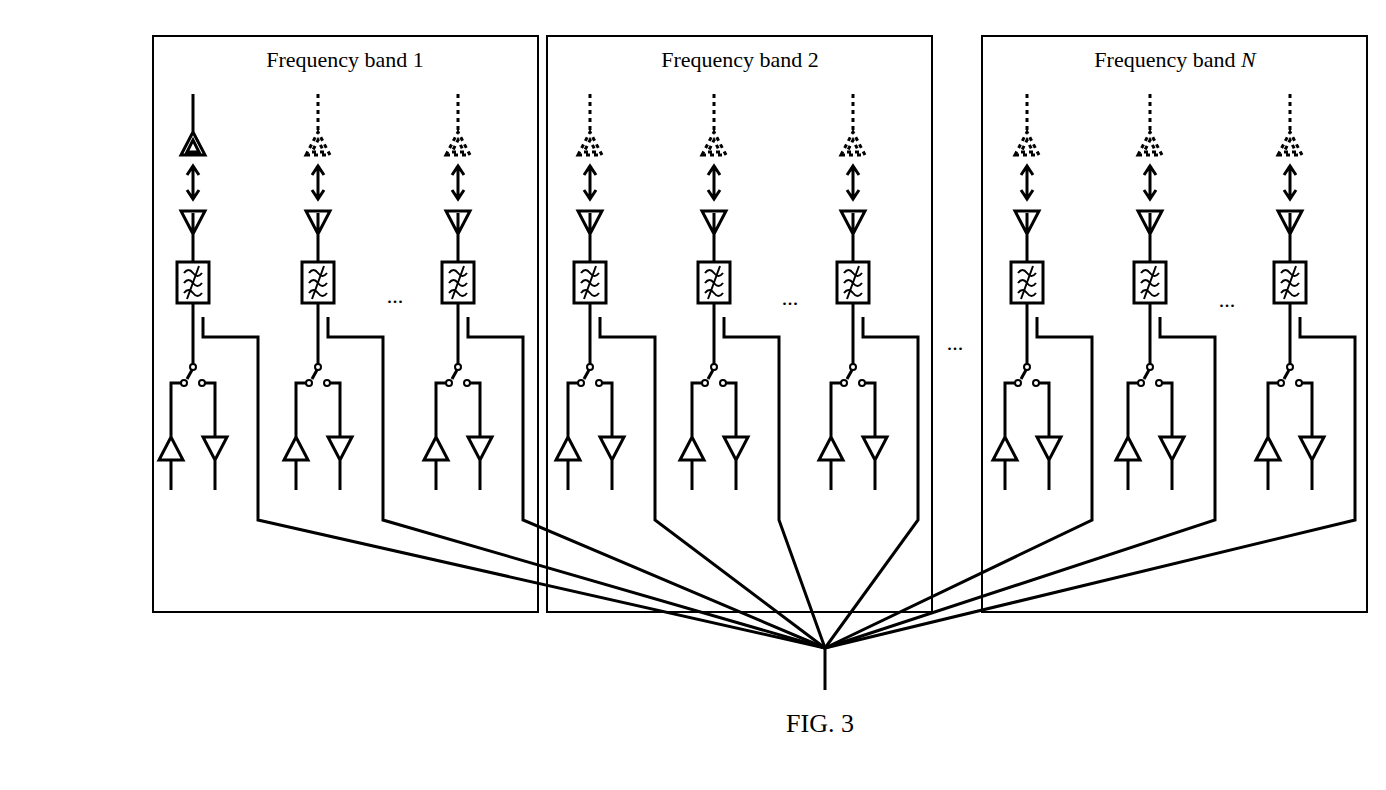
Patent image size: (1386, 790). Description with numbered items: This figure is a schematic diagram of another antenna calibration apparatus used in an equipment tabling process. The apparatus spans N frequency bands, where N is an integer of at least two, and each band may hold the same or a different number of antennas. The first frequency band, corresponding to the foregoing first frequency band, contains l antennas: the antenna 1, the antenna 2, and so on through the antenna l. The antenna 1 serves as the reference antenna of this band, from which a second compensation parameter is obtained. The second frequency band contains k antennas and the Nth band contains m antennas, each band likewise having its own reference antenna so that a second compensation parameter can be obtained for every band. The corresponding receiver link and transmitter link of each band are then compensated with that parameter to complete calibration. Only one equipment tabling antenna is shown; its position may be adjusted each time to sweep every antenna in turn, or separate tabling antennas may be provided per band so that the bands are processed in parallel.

The antenna 1 is at (492, 371).
The antenna 2 is at (554, 371).
The antenna l is at (624, 371).